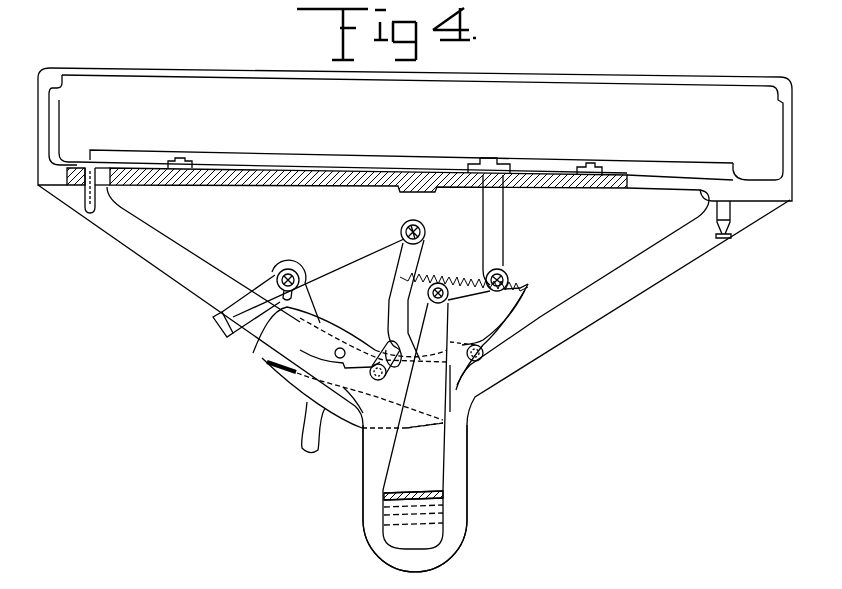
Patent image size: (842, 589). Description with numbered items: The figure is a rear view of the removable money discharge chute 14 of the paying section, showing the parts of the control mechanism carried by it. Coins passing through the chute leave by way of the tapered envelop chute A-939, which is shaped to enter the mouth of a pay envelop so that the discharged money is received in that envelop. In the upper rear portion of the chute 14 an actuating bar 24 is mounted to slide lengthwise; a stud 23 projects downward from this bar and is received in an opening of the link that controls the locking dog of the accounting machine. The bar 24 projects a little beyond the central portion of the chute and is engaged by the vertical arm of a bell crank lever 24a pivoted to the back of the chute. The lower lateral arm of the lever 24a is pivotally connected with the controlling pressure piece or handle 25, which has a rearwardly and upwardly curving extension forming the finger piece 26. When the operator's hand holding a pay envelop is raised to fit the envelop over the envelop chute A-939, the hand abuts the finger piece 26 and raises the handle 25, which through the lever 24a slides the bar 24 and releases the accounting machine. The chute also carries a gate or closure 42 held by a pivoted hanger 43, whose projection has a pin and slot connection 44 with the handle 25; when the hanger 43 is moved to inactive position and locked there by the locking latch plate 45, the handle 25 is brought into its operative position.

The discharge chute 14 is at (588, 297).
The stud 23 is at (86, 200).
The actuating bar 24 is at (530, 162).
The bell crank lever 24a is at (488, 231).
The pressure piece 25 is at (410, 460).
The finger piece 26 is at (417, 527).
The closure 42 is at (293, 392).
The hanger 43 is at (387, 270).
The pin and slot connection 44 is at (386, 377).
The locking latch plate 45 is at (280, 335).
The envelop chute A-939 is at (446, 497).